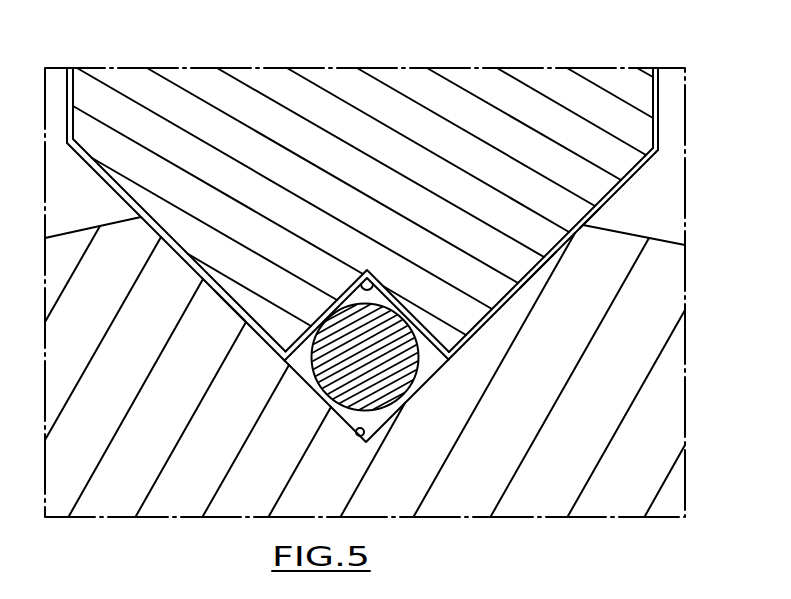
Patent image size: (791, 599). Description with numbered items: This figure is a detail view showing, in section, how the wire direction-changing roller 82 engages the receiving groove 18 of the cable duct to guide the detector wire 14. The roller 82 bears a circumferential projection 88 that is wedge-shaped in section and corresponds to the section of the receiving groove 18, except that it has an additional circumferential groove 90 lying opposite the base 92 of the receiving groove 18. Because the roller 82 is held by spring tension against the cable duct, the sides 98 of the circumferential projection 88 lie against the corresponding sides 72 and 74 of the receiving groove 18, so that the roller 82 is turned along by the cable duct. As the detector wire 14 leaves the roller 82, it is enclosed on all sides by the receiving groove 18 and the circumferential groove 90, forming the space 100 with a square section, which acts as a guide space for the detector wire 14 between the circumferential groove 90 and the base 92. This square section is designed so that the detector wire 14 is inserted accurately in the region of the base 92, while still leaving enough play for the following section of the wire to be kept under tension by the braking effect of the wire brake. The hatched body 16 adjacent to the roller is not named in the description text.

The detector wire 14 is at (393, 380).
The lower block 16 is at (566, 455).
The receiving groove 18 is at (143, 217).
The side of the receiving groove 72 is at (201, 258).
The side of the receiving groove 74 is at (546, 250).
The wire direction-changing roller 82 is at (664, 102).
The circumferential projection 88 is at (570, 215).
The circumferential groove 90 is at (373, 282).
The base of the receiving groove 92 is at (353, 435).
The sides of the circumferential projection 98 is at (228, 314).
The space 100 is at (417, 362).